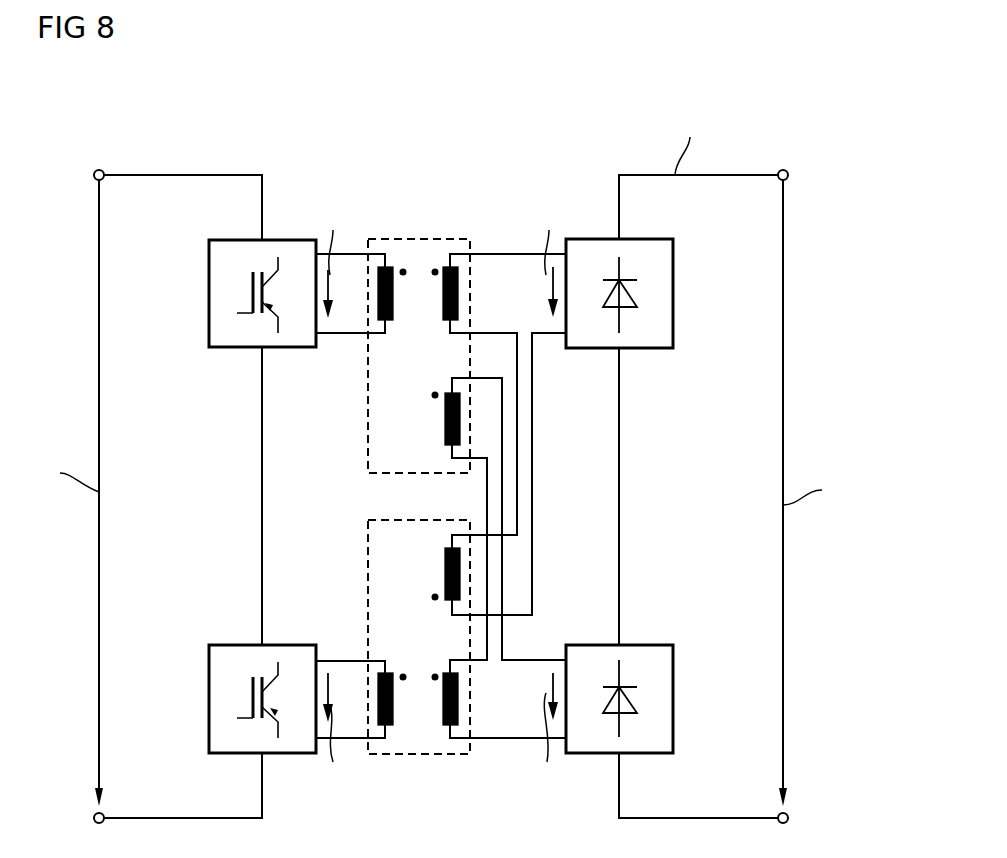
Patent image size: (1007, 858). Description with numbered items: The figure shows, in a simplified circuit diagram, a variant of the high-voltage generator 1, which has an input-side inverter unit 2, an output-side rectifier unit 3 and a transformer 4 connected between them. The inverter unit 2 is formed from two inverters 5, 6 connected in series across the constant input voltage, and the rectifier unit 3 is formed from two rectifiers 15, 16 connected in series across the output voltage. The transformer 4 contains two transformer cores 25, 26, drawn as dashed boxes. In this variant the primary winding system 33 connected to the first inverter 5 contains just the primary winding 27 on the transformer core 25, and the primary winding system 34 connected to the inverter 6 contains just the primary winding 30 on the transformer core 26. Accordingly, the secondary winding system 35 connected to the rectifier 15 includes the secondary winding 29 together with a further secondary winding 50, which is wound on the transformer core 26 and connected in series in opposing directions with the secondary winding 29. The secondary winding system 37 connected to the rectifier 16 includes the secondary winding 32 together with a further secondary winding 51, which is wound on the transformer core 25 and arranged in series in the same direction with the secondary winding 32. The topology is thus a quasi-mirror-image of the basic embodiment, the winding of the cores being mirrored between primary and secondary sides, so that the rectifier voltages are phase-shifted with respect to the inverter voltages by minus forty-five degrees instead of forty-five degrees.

The high-voltage generator 1 is at (752, 90).
The inverter unit 2 is at (222, 496).
The first inverter 5 is at (209, 292).
The inverter 6 is at (209, 698).
The rectifier unit 3 is at (669, 496).
The rectifier 15 is at (673, 292).
The rectifier 16 is at (673, 698).
The transformer 4 is at (373, 497).
The transformer core 25 is at (368, 428).
The transformer core 26 is at (368, 567).
The primary winding 27 is at (388, 267).
The secondary winding 29 is at (450, 267).
The primary winding 30 is at (386, 725).
The secondary winding 32 is at (451, 725).
The primary winding system 33 is at (345, 335).
The primary winding system 34 is at (333, 661).
The secondary winding system 35 is at (547, 335).
The secondary winding system 37 is at (540, 660).
The secondary winding 50 is at (445, 578).
The secondary winding 51 is at (445, 420).